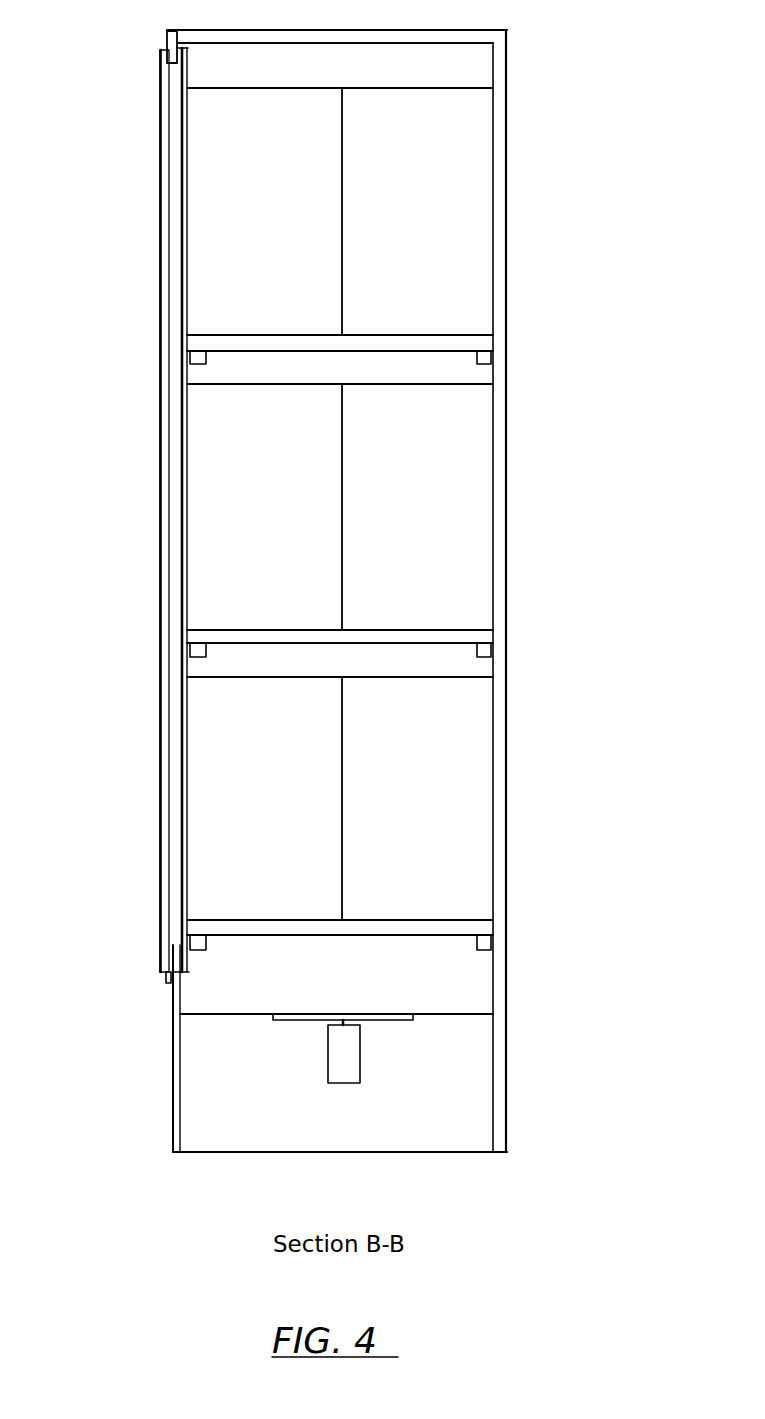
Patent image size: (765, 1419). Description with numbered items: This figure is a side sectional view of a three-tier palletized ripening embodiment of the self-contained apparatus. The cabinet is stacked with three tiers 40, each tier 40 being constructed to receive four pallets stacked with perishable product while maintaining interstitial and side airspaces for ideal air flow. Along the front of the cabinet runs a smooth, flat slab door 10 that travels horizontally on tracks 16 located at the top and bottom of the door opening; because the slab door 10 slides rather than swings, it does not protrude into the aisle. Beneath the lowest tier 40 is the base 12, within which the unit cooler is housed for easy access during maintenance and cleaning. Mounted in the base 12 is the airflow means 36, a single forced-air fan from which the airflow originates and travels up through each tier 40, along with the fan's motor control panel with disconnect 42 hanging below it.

The slab door 10 is at (160, 582).
The base 12 is at (437, 1048).
The tracks 16 is at (163, 46).
The airflow means 36 is at (280, 1020).
The tier 40 is at (442, 147).
The motor control panel with disconnect 42 is at (343, 1060).